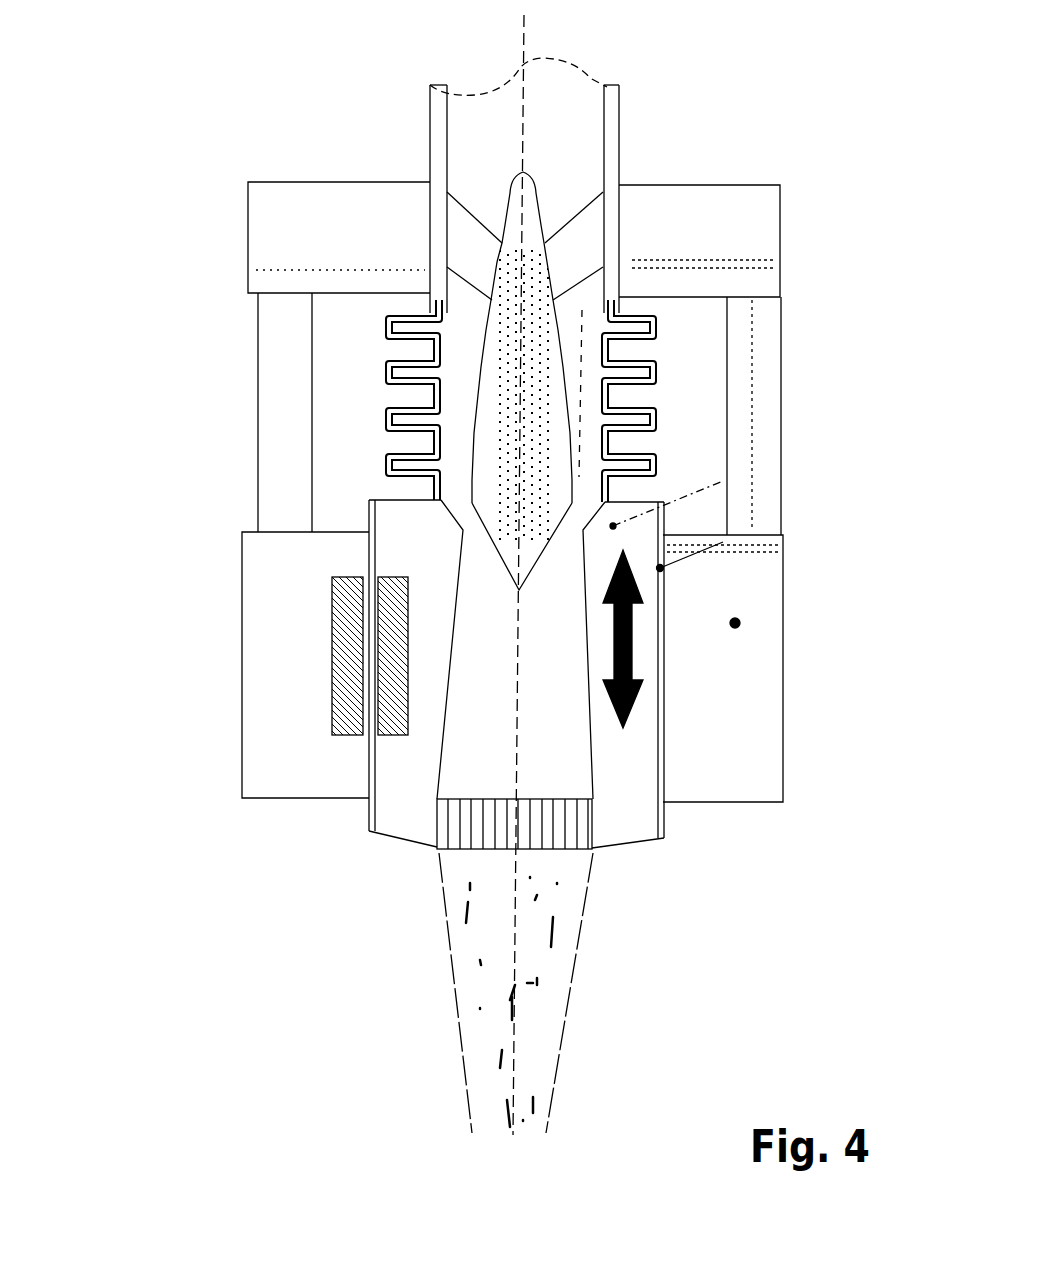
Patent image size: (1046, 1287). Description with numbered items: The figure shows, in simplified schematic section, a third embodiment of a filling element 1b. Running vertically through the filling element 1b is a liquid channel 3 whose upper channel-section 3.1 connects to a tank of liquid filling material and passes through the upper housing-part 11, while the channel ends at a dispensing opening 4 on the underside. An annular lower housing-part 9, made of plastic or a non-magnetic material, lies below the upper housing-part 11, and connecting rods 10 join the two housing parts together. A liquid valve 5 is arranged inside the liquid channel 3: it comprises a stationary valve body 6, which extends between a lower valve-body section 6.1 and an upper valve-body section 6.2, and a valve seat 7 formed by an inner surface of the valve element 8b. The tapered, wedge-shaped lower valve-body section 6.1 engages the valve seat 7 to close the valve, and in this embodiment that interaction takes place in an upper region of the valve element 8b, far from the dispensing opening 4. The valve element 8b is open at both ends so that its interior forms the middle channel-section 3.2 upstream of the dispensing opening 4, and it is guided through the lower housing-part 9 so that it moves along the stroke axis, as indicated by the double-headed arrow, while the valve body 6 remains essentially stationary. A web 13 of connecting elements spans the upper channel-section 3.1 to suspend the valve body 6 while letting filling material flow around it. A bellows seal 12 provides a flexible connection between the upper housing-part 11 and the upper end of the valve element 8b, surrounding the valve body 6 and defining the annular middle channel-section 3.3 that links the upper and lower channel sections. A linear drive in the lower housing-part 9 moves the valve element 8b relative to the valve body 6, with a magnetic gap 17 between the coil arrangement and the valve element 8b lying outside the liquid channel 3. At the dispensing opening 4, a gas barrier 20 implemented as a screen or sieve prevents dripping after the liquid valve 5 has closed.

The filling element 1b is at (165, 205).
The liquid channel 3 is at (457, 398).
The upper channel-section 3.1 is at (583, 110).
The middle channel-section 3.2 is at (553, 737).
The annular middle channel-section 3.3 is at (583, 408).
The dispensing opening 4 is at (437, 837).
The liquid valve 5 is at (425, 517).
The valve body 6 is at (525, 345).
The lower valve-body section 6.1 is at (507, 549).
The upper valve-body section 6.2 is at (535, 179).
The valve seat 7 is at (460, 545).
The valve element 8b is at (628, 753).
The lower housing-part 9 is at (740, 622).
The connecting rods 10 is at (767, 407).
The upper housing-part 11 is at (707, 210).
The seal 12 is at (652, 343).
The web 13 is at (460, 248).
The magnetic gap 17 is at (663, 678).
The gas barrier 20 is at (568, 827).